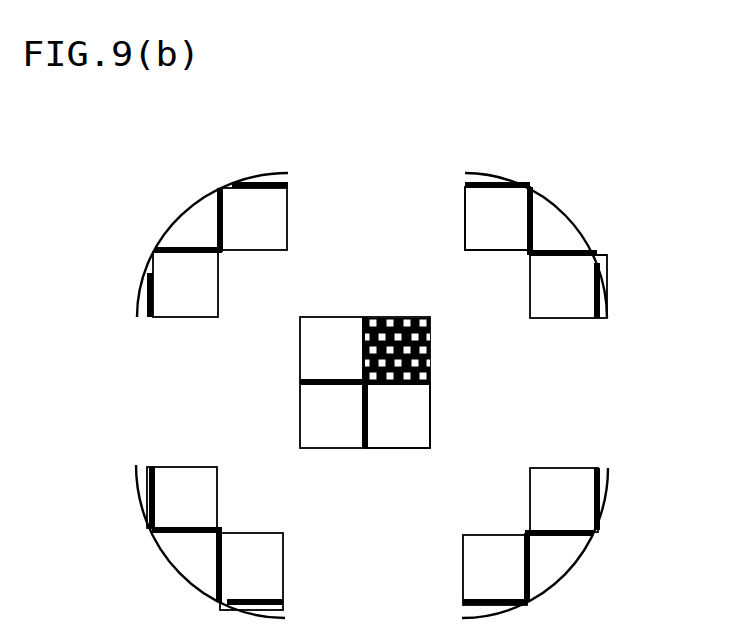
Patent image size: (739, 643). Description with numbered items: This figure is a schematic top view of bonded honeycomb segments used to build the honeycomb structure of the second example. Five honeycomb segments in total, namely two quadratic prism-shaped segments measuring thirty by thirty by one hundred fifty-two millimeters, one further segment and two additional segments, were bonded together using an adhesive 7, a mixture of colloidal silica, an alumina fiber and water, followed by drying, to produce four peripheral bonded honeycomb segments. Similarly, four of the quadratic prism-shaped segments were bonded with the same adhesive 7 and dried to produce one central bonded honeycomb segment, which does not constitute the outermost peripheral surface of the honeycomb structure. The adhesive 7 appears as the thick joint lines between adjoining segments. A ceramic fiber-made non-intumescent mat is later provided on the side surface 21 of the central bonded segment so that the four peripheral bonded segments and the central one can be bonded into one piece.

The adhesive 7 is at (575, 250).
The side surface 21 is at (422, 430).